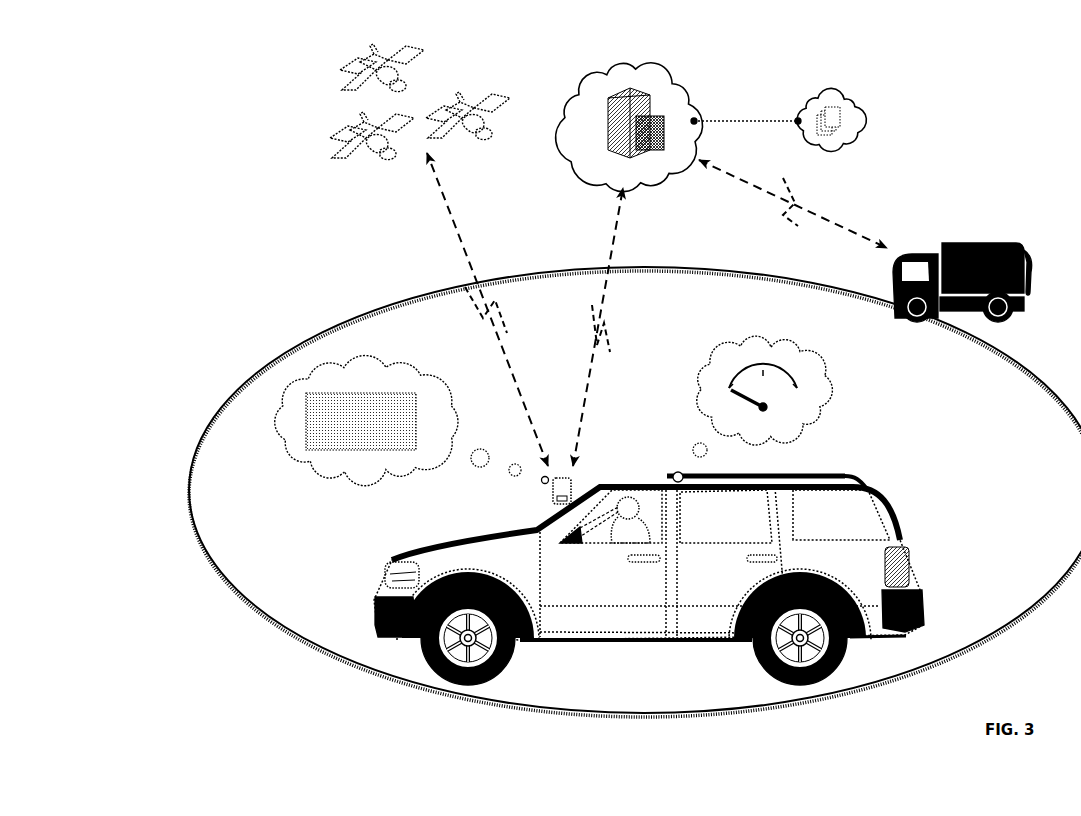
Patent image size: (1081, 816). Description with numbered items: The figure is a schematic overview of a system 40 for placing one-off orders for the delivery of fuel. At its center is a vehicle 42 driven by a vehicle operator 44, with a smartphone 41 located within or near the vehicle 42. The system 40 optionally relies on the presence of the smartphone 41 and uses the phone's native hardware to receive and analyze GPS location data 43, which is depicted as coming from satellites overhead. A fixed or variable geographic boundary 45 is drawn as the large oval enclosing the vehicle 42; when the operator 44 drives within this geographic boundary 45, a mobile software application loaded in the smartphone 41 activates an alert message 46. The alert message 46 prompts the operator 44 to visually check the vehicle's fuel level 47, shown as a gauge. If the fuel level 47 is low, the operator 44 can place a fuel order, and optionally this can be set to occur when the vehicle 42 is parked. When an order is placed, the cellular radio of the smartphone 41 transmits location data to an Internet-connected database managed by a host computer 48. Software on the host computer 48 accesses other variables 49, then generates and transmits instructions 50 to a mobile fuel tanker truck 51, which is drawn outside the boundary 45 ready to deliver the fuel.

The system 40 is at (200, 172).
The smartphone 41 is at (548, 492).
The vehicle 42 is at (893, 508).
The GPS location data 43 is at (432, 191).
The vehicle operator 44 is at (652, 528).
The geographic boundary 45 is at (273, 620).
The alert message 46 is at (367, 485).
The fuel level 47 is at (813, 410).
The host computer 48 is at (677, 77).
The other variables 49 is at (865, 123).
The instructions 50 is at (830, 203).
The mobile fuel tanker truck 51 is at (965, 240).